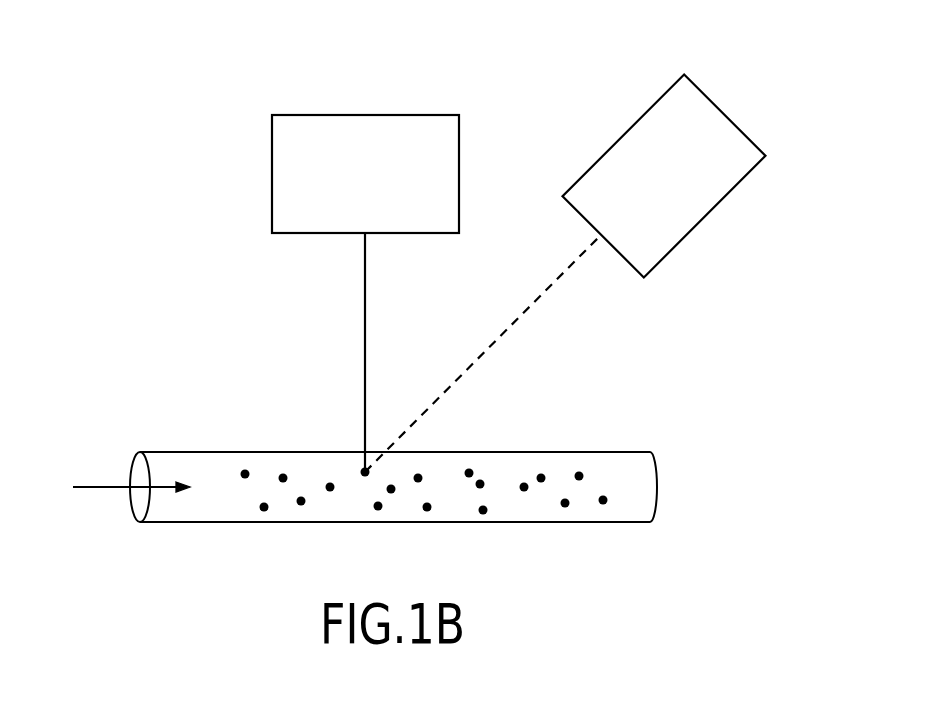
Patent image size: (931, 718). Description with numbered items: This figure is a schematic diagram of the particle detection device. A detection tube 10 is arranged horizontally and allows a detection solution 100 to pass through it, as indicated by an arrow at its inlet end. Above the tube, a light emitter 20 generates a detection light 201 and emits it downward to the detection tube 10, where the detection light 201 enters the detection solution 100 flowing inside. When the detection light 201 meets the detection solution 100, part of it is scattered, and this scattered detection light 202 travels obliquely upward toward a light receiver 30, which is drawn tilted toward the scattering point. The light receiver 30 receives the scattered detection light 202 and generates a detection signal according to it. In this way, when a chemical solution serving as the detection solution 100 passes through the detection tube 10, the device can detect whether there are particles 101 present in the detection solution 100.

The detection tube 10 is at (588, 452).
The light emitter 20 is at (407, 113).
The light receiver 30 is at (730, 113).
The detection solution 100 is at (225, 475).
The particles 101 is at (330, 487).
The detection light 201 is at (365, 319).
The scattered detection light 202 is at (483, 353).